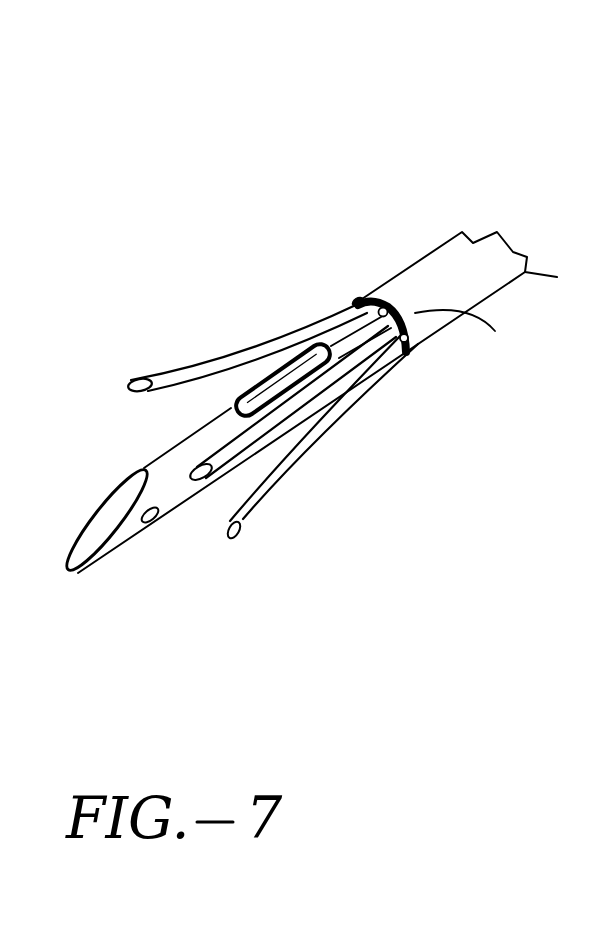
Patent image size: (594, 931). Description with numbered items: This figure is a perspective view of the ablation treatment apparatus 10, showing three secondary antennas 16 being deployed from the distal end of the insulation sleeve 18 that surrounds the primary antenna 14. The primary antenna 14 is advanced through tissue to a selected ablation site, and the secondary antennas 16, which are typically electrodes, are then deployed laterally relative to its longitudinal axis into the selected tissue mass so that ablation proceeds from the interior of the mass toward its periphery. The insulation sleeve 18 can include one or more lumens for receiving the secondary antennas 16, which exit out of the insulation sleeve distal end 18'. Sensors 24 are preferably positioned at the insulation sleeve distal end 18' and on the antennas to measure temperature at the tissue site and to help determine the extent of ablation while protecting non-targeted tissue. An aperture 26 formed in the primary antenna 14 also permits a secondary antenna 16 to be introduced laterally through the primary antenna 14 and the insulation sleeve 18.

The ablation treatment apparatus 10 is at (351, 176).
The primary antenna 14 is at (182, 494).
The secondary antennas 16 is at (247, 353).
The insulation sleeve 18 is at (317, 394).
The insulation sleeve distal end 18' is at (476, 333).
The sensors 24 is at (383, 292).
The aperture 26 is at (265, 392).